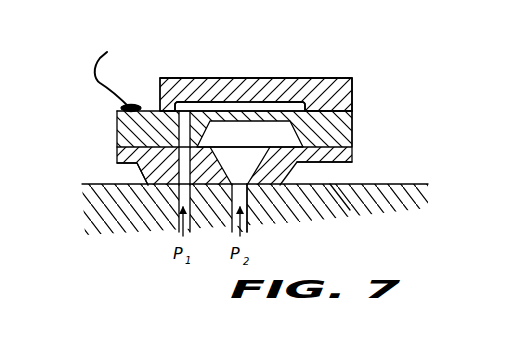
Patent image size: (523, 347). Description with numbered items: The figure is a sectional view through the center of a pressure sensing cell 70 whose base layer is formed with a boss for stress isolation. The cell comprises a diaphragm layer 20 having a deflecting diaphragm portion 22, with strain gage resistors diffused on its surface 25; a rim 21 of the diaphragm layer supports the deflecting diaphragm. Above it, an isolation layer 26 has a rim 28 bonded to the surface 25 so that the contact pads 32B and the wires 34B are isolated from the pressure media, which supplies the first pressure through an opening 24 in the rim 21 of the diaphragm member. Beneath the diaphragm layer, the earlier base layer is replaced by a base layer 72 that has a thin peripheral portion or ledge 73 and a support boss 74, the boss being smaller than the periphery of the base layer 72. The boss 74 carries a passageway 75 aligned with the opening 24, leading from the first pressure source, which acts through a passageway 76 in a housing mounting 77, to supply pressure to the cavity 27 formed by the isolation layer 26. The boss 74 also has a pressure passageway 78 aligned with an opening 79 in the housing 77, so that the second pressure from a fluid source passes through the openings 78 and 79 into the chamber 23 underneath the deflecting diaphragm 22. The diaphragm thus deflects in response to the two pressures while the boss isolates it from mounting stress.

The diaphragm layer 20 is at (352, 116).
The rim 21 is at (353, 130).
The deflecting diaphragm portion 22 is at (224, 121).
The chamber 23 is at (287, 105).
The opening 24 is at (178, 127).
The surface 25 is at (213, 108).
The isolation layer 26 is at (353, 78).
The cavity 27 is at (248, 102).
The rim 28 is at (353, 88).
The contact pads 32B is at (138, 105).
The wires 34B is at (100, 83).
The sensing cell 70 is at (330, 74).
The base layer 72 is at (114, 164).
The ledge 73 is at (336, 162).
The support boss 74 is at (345, 200).
The passageway 75 is at (176, 185).
The passageway 76 is at (177, 206).
The housing mounting 77 is at (394, 193).
The pressure passageway 78 is at (215, 200).
The opening 79 is at (255, 196).